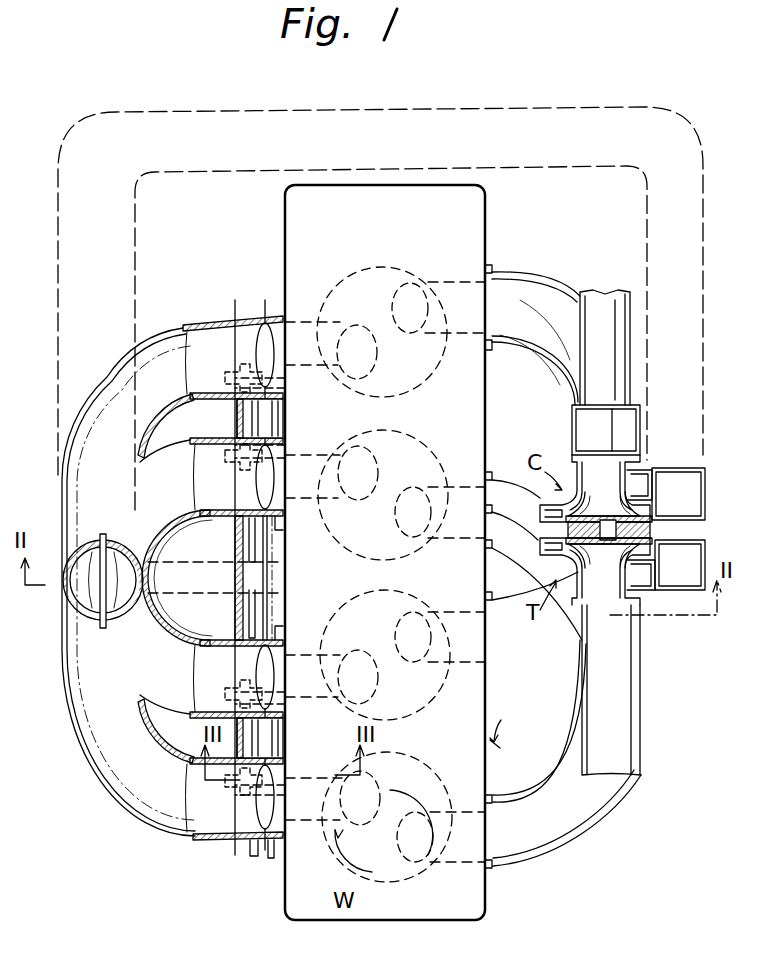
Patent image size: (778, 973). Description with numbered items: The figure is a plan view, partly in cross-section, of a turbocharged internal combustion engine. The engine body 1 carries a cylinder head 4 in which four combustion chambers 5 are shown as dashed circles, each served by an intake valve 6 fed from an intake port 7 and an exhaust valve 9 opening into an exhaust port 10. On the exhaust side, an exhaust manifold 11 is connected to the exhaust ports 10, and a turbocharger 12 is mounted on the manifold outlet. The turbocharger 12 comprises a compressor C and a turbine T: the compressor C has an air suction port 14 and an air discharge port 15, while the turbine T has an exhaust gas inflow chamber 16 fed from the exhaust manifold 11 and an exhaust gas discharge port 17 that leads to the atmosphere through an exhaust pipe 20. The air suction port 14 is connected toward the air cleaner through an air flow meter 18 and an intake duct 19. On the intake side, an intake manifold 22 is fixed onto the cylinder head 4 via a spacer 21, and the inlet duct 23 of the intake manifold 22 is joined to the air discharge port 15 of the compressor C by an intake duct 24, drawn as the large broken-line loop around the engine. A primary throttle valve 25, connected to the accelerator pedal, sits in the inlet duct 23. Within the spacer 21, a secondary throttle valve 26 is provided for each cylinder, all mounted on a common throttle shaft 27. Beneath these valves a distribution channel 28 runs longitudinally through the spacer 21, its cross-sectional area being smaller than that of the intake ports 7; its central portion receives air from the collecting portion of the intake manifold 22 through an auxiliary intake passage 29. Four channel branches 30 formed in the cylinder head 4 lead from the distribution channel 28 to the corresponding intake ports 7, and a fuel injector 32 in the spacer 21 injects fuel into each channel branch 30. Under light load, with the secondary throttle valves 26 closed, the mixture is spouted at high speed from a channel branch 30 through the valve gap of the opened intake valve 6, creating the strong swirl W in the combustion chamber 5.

The engine body 1 is at (503, 725).
The cylinder head 4 is at (482, 222).
The combustion chamber 5 is at (352, 276).
The intake valve 6 is at (362, 380).
The intake port 7 is at (306, 322).
The exhaust valve 9 is at (402, 292).
The exhaust port 10 is at (462, 282).
The exhaust manifold 11 is at (575, 826).
The turbocharger 12 is at (713, 510).
The air suction port 14 is at (585, 468).
The air discharge port 15 is at (690, 484).
The exhaust gas inflow chamber 16 is at (688, 560).
The exhaust gas discharge port 17 is at (642, 582).
The air flow meter 18 is at (640, 422).
The intake duct 19 is at (580, 318).
The exhaust pipe 20 is at (636, 714).
The spacer 21 is at (254, 850).
The intake manifold 22 is at (112, 780).
The inlet duct 23 is at (68, 602).
The intake duct 24 is at (410, 111).
The primary throttle valve 25 is at (75, 576).
The secondary throttle valve 26 is at (256, 350).
The common throttle shaft 27 is at (271, 860).
The distribution channel 28 is at (282, 566).
The auxiliary intake passage 29 is at (175, 590).
The channel branch 30 is at (286, 372).
The fuel injector 32 is at (178, 332).